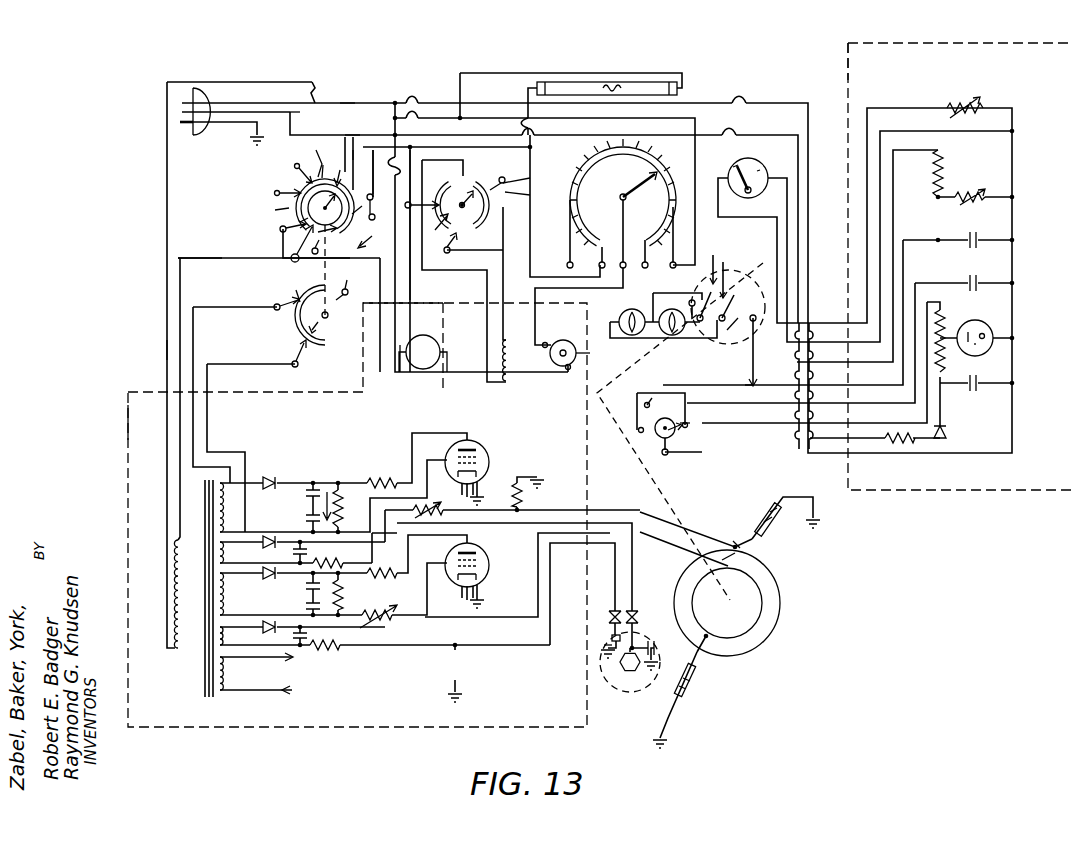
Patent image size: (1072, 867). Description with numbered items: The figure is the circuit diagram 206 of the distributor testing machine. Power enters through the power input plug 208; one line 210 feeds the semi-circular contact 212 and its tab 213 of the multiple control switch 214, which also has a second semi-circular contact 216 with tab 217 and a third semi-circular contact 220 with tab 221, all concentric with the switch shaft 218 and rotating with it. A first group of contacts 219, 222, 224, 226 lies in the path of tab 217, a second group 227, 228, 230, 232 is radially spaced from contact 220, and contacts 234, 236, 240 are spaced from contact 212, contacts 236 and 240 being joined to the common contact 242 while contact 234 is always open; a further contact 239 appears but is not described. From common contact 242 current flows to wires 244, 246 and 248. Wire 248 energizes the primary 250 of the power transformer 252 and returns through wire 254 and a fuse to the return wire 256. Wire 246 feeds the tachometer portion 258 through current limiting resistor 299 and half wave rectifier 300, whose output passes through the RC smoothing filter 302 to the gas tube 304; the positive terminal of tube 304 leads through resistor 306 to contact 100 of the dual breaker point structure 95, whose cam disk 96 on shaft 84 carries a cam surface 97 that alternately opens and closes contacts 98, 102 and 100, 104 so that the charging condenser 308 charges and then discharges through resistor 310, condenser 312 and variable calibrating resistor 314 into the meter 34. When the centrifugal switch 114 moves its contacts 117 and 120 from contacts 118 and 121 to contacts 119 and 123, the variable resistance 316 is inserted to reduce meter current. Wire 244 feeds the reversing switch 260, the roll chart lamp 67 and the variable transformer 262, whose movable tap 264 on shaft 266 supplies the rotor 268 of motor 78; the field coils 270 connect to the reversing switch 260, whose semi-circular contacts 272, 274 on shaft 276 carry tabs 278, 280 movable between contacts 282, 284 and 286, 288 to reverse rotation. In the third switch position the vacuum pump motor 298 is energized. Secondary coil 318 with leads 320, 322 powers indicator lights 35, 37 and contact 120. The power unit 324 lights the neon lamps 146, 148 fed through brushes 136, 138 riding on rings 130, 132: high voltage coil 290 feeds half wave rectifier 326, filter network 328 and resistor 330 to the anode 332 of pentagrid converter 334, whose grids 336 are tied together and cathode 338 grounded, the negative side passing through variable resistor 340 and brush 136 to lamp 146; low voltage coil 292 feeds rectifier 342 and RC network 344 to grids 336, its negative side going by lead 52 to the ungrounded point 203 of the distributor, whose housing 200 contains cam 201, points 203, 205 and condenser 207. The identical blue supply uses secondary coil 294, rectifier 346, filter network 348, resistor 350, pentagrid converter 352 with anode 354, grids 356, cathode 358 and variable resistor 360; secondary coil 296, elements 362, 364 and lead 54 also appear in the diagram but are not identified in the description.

The circuit diagram 206 is at (94, 152).
The power input plug 208 is at (206, 100).
The line 210 is at (292, 125).
The semi-circular contact 212 is at (349, 182).
The radially extending tab 213 is at (340, 235).
The multiple control switch 214 is at (270, 187).
The second semi-circular contact 216 is at (300, 222).
The radially extending tab 217 is at (321, 170).
The switch shaft 218 is at (325, 206).
The contact 219 is at (320, 160).
The third semi-circular contact 220 is at (313, 348).
The radially extending tab 221 is at (341, 311).
The contact 222 is at (287, 170).
The contact 224 is at (274, 194).
The contact 226 is at (281, 231).
The contact 227 is at (354, 290).
The contact 228 is at (304, 294).
The contact 230 is at (275, 306).
The contact 232 is at (291, 353).
The contact 234 is at (296, 262).
The contact 236 is at (377, 244).
The contact 239 is at (365, 214).
The contact 240 is at (383, 175).
The common contact 242 is at (384, 214).
The wire 244 is at (366, 152).
The wire 246 is at (363, 150).
The wire 248 is at (200, 270).
The primary 250 is at (185, 648).
The power transformer 252 is at (186, 677).
The wire 254 is at (166, 348).
The return wire 256 is at (340, 102).
The portion of tachometer circuit 258 is at (839, 60).
The reversing switch 260 is at (403, 295).
The variable transformer 262 is at (588, 168).
The movable tap 264 is at (652, 192).
The shaft 266 is at (630, 184).
The rotor 268 is at (562, 340).
The field coils 270 is at (500, 368).
The semi-circular contact 272 is at (458, 213).
The semi-circular contact 274 is at (482, 224).
The shaft 276 is at (454, 205).
The radially extending tab 278 is at (530, 195).
The radially extending tab 280 is at (422, 192).
The contact 282 is at (530, 180).
The contact 284 is at (501, 177).
The contact 286 is at (432, 232).
The contact 288 is at (446, 254).
The high voltage secondary coil 290 is at (225, 608).
The low voltage secondary coil 292 is at (228, 636).
The secondary coil 294 is at (218, 499).
The secondary winding 296 is at (228, 553).
The vacuum pump motor 298 is at (441, 350).
The current limiting resistor 299 is at (902, 444).
The half wave rectifier 300 is at (948, 430).
The RC smoothing filter 302 is at (978, 376).
The gas tube 304 is at (988, 326).
The current limiting resistor 306 is at (942, 318).
The charging condenser 308 is at (968, 280).
The resistor 310 is at (935, 178).
The condenser 312 is at (975, 232).
The variable calibrating resistor 314 is at (968, 190).
The variable resistance 316 is at (960, 102).
The secondary coil 318 is at (224, 678).
The lead 320 is at (712, 256).
The lead 322 is at (726, 262).
The power unit 324 is at (120, 428).
The half wave rectifier 326 is at (272, 580).
The filter network 328 is at (306, 592).
The current limiting resistor 330 is at (365, 589).
The plate or anode 332 is at (477, 548).
The pentagrid converter 334 is at (482, 553).
The grids 336 is at (485, 566).
The cathode 338 is at (483, 580).
The variable resistor 340 is at (378, 601).
The half wave rectifier 342 is at (281, 636).
The RC network 344 is at (308, 640).
The half wave rectifier 346 is at (274, 476).
The filter network 348 is at (327, 492).
The current limiting resistor 350 is at (372, 482).
The pentagrid converter 352 is at (482, 442).
The anode 354 is at (473, 446).
The connected grids 356 is at (455, 458).
The cathode 358 is at (480, 464).
The variable resistor 360 is at (433, 499).
The rectifier 362 is at (270, 535).
The capacitor 364 is at (308, 553).
The tachometer meter 34 is at (748, 178).
The indicator light 35 is at (670, 309).
The indicator light 37 is at (626, 312).
The lamp 67 is at (640, 82).
The motor 78 is at (585, 358).
The shaft 84 is at (625, 452).
The dual breaker point structure 95 is at (686, 460).
The cam disk 96 is at (655, 432).
The cam surface 97 is at (662, 455).
The spring mounted contact 98 is at (646, 414).
The spring mounted contact 100 is at (682, 430).
The fixed contact 102 is at (638, 430).
The fixed contact 104 is at (688, 424).
The centrifugal double pole double throw switch 114 is at (739, 377).
The movable contact 117 is at (679, 306).
The fixed contact 118 is at (698, 330).
The fixed contact 119 is at (718, 328).
The movable contact 120 is at (752, 290).
The contact 121 is at (732, 335).
The contact 123 is at (756, 329).
The conductive ring 130 is at (706, 592).
The conductive ring 132 is at (781, 605).
The brush 136 is at (738, 555).
The brush 138 is at (740, 542).
The neon lamp 146 is at (684, 683).
The neon lamp 148 is at (778, 540).
The lead 52 is at (614, 590).
The valve 54 is at (632, 590).
The housing 200 is at (612, 688).
The cam 201 is at (630, 671).
The point 203 is at (612, 640).
The point 205 is at (604, 660).
The condenser 207 is at (651, 638).